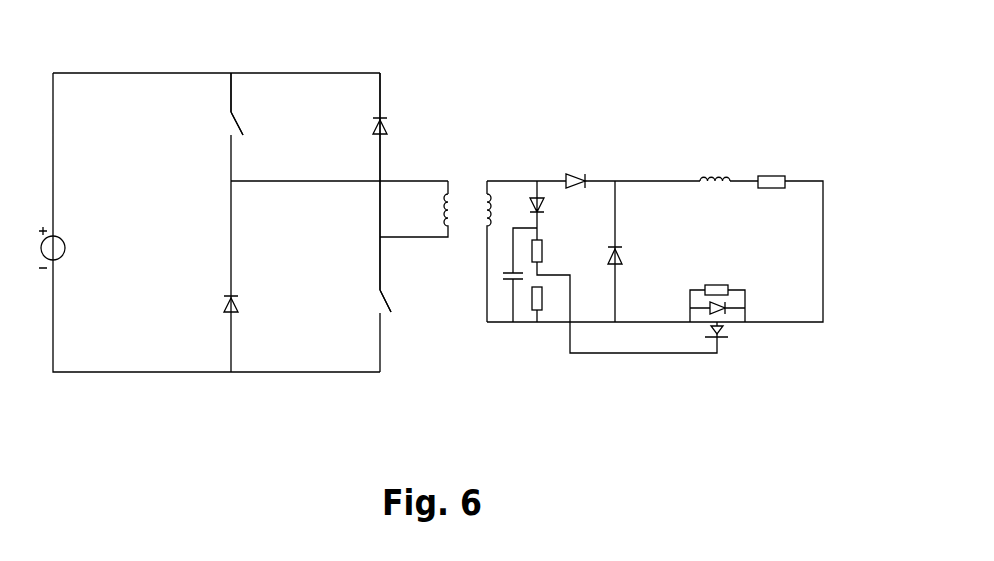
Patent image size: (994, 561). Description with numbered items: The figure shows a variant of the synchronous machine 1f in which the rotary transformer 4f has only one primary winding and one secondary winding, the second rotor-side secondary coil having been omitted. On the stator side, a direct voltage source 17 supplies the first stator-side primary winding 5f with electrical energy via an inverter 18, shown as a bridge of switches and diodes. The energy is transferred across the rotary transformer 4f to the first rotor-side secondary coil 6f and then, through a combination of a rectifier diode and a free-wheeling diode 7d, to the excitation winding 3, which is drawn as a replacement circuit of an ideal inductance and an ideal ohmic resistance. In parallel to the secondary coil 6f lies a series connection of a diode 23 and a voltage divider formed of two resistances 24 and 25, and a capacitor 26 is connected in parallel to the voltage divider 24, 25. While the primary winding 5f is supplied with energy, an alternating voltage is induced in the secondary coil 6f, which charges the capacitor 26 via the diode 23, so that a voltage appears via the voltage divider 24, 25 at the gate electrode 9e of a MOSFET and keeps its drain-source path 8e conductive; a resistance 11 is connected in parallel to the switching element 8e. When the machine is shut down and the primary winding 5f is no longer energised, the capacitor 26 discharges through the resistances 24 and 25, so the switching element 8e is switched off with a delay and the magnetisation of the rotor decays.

The voltage source 17 is at (59, 240).
The inverter 18 is at (380, 67).
The rotary transformer 4f is at (437, 213).
The first stator-side primary winding 5f is at (414, 189).
The first rotor-side secondary coil 6f is at (480, 232).
The synchronous machine 1f is at (713, 87).
The diode 23 is at (536, 194).
The resistance 24 is at (544, 252).
The resistance 25 is at (534, 306).
The capacitor 26 is at (502, 280).
The rectifier diode and free-wheeling diode 7d is at (625, 165).
The excitation winding 3 is at (788, 165).
The resistance 11 is at (721, 286).
The switching element 8e is at (724, 329).
The control element 9e is at (721, 340).